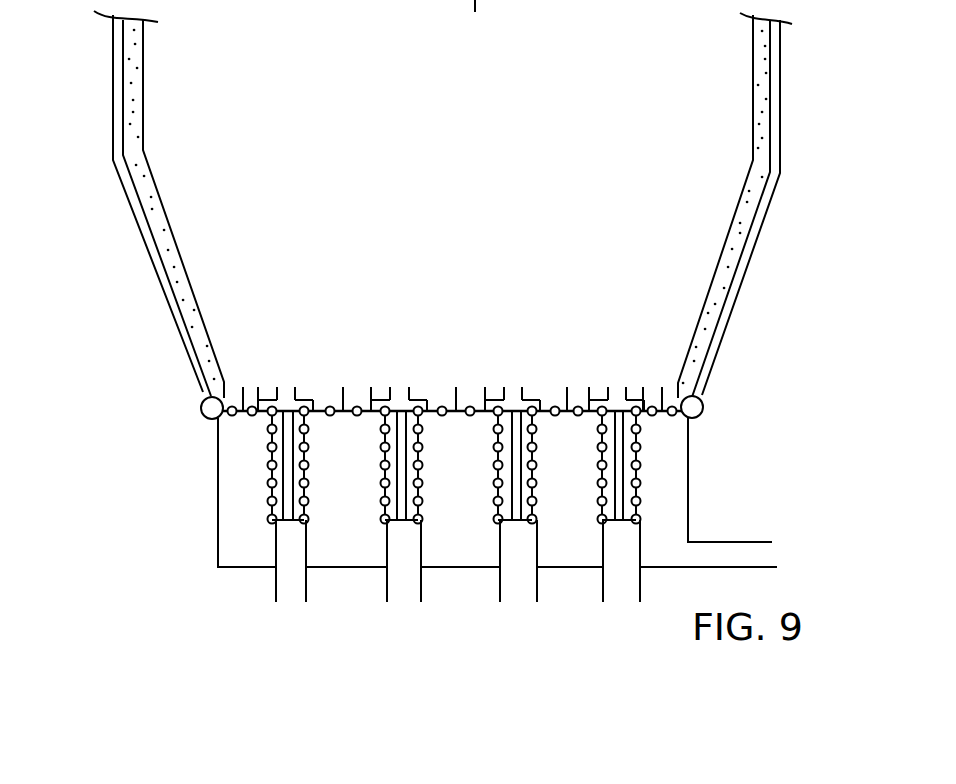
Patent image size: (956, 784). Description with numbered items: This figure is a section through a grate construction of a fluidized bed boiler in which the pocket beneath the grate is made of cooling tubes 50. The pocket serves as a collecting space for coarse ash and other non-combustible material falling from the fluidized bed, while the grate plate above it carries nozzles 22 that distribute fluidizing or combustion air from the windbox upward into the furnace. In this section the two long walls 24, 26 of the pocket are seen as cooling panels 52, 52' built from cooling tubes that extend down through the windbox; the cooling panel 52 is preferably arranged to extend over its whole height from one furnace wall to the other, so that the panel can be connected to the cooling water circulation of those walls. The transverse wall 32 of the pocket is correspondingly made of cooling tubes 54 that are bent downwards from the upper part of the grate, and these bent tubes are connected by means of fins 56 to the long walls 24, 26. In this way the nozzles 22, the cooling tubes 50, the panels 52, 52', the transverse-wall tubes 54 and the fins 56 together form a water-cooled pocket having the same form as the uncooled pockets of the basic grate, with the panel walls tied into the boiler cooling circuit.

The nozzle 22 is at (475, 398).
The long wall 24 is at (272, 454).
The long wall 26 is at (305, 455).
The transverse wall 32 is at (287, 412).
The cooling tube 50 is at (420, 447).
The cooling panel 52 is at (583, 525).
The cooling panel 52' is at (711, 465).
The cooling tube 54 is at (612, 398).
The fin 56 is at (627, 440).